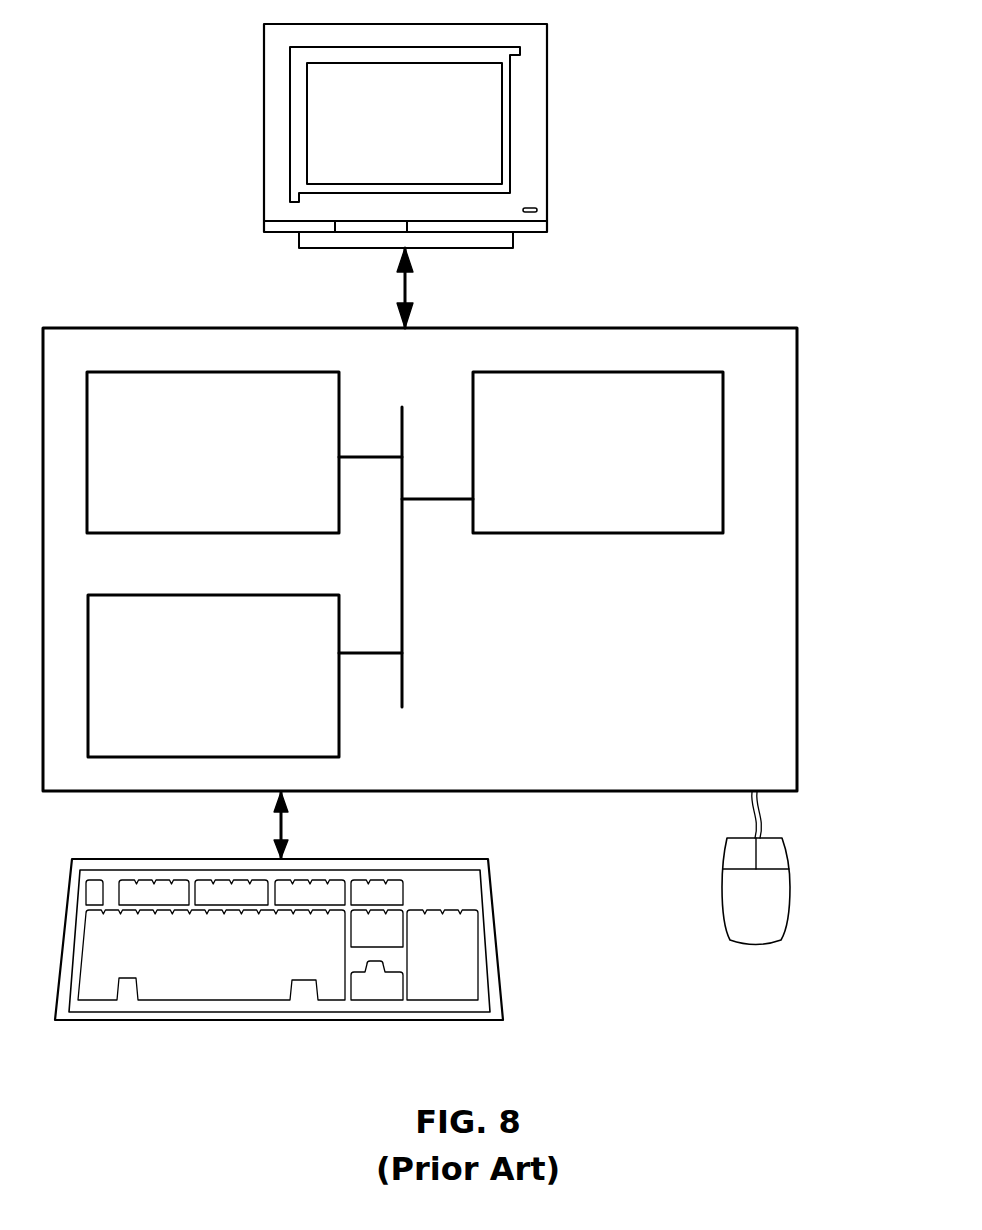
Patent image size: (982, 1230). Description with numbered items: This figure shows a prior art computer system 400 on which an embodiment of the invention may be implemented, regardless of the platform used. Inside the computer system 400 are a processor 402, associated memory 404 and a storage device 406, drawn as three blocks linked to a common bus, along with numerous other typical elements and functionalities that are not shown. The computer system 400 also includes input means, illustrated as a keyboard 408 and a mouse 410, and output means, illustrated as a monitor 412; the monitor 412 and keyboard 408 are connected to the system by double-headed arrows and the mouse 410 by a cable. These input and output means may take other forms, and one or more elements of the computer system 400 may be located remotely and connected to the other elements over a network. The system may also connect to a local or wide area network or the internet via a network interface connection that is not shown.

The computer system 400 is at (735, 170).
The processor 402 is at (595, 464).
The memory 404 is at (190, 464).
The storage device 406 is at (187, 689).
The keyboard 408 is at (182, 979).
The mouse 410 is at (733, 912).
The monitor 412 is at (382, 141).